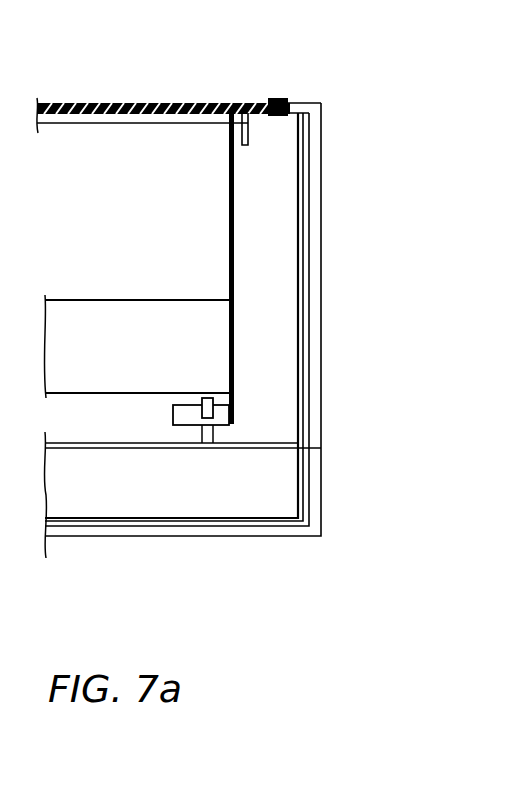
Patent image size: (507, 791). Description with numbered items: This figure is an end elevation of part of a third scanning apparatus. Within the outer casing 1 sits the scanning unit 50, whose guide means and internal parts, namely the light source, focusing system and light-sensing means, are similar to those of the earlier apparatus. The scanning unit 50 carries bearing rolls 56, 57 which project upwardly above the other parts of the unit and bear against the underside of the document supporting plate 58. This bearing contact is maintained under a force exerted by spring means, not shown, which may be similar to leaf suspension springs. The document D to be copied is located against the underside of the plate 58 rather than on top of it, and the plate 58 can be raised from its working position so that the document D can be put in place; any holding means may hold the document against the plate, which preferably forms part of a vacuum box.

The document D is at (128, 101).
The document supporting plate 58 is at (217, 101).
The bearing roll 57 is at (255, 102).
The bearing roll 56 is at (336, 69).
The scanning unit 50 is at (235, 266).
The outer casing 1 is at (315, 393).